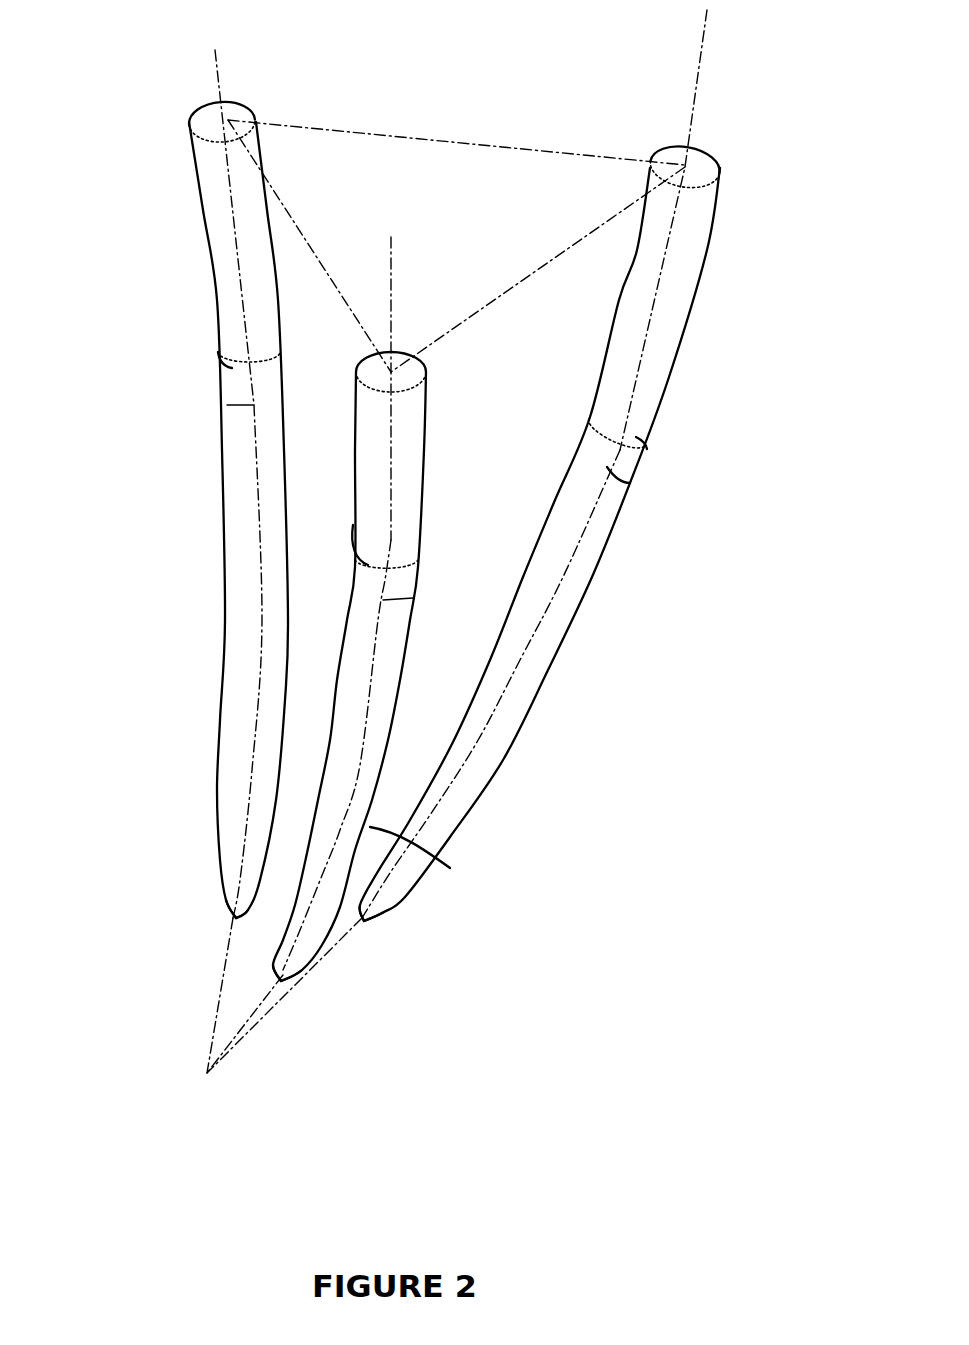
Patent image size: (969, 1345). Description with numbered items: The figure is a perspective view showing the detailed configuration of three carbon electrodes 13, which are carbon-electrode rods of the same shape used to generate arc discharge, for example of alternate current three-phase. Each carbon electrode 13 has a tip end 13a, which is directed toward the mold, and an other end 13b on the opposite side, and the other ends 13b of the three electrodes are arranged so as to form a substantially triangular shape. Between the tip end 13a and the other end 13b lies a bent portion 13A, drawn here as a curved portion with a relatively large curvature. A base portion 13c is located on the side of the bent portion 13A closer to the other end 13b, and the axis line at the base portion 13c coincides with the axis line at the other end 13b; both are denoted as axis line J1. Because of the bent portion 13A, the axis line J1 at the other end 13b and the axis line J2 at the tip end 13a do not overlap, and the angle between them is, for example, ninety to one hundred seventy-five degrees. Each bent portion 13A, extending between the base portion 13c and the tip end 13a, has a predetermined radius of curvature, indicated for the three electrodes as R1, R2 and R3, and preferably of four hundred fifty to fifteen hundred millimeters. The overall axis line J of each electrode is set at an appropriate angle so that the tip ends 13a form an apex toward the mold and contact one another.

The carbon electrode 13 is at (227, 312).
The tip end 13a is at (228, 920).
The other end 13b is at (212, 104).
The base portion 13c is at (218, 365).
The bent portion 13A is at (218, 775).
The axis line J is at (217, 72).
The axis line at the other end J1 is at (225, 408).
The axis line at the tip end J2 is at (242, 873).
The radius of curvature R1 is at (257, 720).
The radius of curvature R2 is at (358, 765).
The radius of curvature R3 is at (477, 742).